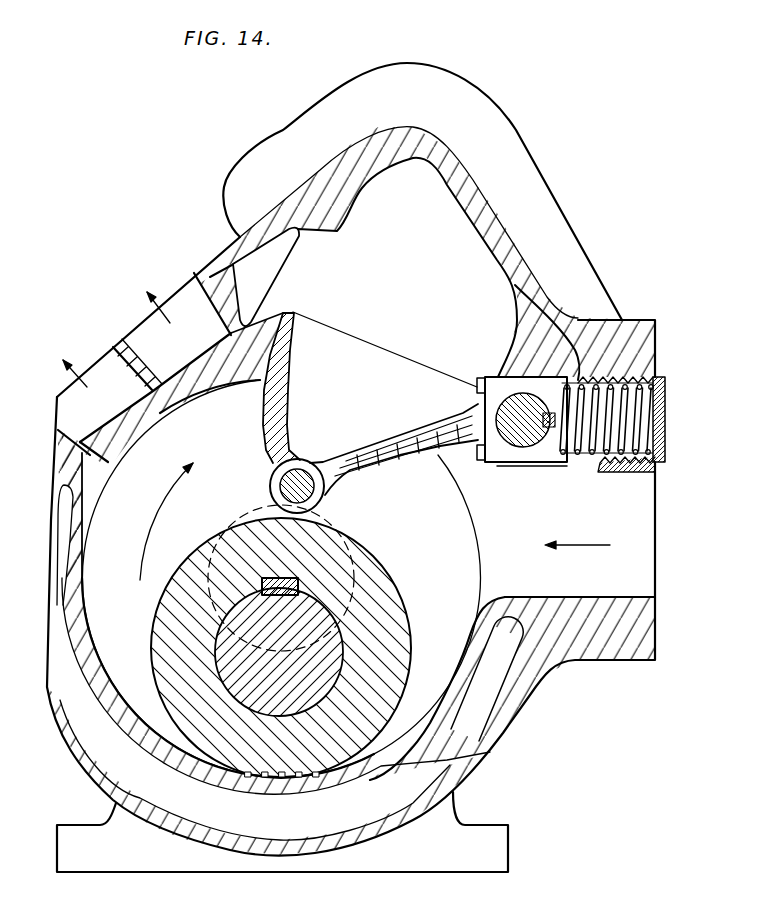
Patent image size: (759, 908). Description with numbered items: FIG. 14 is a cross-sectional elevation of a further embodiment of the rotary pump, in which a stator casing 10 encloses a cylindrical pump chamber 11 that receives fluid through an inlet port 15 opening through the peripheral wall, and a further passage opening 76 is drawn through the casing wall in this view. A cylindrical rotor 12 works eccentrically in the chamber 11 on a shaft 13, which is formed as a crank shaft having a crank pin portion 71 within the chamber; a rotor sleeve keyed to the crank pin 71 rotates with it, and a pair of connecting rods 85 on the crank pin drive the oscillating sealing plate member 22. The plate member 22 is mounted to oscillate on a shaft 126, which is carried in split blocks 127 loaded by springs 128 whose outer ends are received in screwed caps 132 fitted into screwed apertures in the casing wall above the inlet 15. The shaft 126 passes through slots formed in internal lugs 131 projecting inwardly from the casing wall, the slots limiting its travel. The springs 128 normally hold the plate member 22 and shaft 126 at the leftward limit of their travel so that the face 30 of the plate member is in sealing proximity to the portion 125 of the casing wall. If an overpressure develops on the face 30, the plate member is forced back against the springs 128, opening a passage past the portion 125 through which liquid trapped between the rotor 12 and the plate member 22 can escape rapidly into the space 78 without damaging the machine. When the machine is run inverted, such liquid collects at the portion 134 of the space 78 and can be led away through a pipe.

The stator casing 10 is at (126, 768).
The pump chamber 11 is at (425, 695).
The rotor 12 is at (363, 587).
The shaft 13 is at (245, 516).
The inlet port 15 is at (632, 559).
The plate member 22 is at (405, 455).
The face of the plate member 30 is at (263, 423).
The crank pin portion 71 is at (328, 647).
The inlet port 76 is at (165, 335).
The space 78 is at (423, 276).
The connecting rods 85 is at (325, 509).
The portion of the casing wall 125 is at (296, 316).
The shaft 126 is at (535, 408).
The split blocks 127 is at (560, 372).
The springs 128 is at (590, 460).
The internal lugs 131 is at (537, 340).
The screwed caps 132 is at (647, 467).
The portion of the space 134 is at (428, 192).